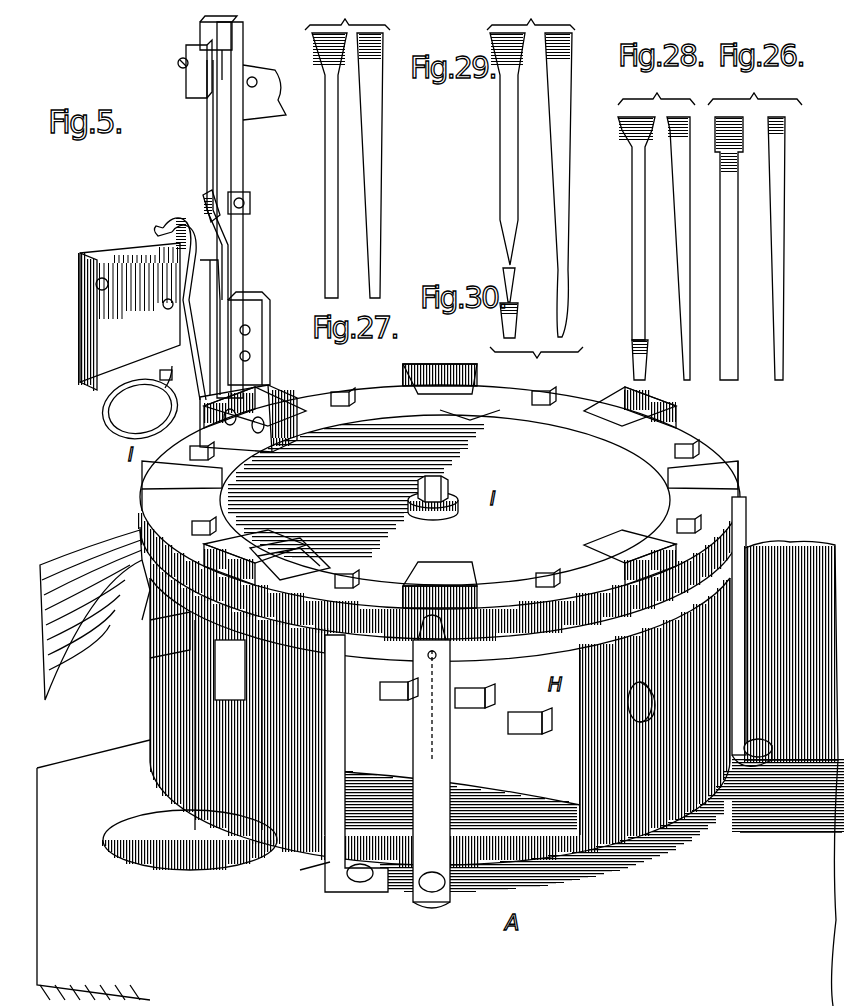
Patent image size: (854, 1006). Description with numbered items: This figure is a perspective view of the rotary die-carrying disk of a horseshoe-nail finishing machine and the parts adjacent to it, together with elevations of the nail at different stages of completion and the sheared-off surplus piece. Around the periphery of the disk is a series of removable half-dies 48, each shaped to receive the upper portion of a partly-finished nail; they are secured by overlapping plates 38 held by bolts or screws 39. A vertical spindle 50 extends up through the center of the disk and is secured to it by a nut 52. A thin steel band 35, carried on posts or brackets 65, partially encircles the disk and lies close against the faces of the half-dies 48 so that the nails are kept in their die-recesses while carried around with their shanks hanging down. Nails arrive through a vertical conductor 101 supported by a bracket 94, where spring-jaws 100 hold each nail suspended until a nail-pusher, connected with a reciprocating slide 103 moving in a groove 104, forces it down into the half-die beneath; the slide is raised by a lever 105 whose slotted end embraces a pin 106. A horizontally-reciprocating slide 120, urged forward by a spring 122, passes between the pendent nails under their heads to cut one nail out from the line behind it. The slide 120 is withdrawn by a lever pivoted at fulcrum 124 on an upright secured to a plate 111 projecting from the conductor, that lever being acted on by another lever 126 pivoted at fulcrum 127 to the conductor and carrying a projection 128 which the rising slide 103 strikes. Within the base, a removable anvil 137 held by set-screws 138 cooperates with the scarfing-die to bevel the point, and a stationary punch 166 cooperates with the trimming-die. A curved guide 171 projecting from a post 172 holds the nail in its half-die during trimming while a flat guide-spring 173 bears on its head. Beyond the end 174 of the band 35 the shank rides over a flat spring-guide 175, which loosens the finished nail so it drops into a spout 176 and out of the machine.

The thin steel band 35 is at (439, 625).
The overlapping plates 38 is at (730, 452).
The bolts or screws 39 is at (195, 452).
The half-dies 48 is at (426, 382).
The vertical spindle 50 is at (448, 484).
The nut 52 is at (414, 492).
The posts or brackets 65 is at (788, 510).
The bracket 94 is at (254, 310).
The spring-jaws 100 is at (226, 302).
The vertical conductor 101 is at (246, 252).
The reciprocating slide 103 is at (190, 80).
The groove 104 is at (212, 40).
The lever 105 is at (262, 80).
The pin 106 is at (178, 63).
The plate 111 is at (154, 295).
The horizontally-reciprocating slide or plate 120 is at (80, 357).
The spring 122 is at (108, 428).
The fulcrum 124 is at (163, 225).
The lever 126 is at (213, 120).
The fulcrum 127 is at (204, 192).
The projection 128 is at (224, 60).
The removable member or anvil 137 is at (640, 720).
The set-screws 138 is at (488, 720).
The stationary punch 166 is at (215, 695).
The curved guide 171 is at (232, 665).
The post 172 is at (330, 810).
The flat guide-spring 173 is at (296, 575).
The end of the band 174 is at (145, 592).
The flat spring-guide 175 is at (148, 634).
The spout 176 is at (55, 573).